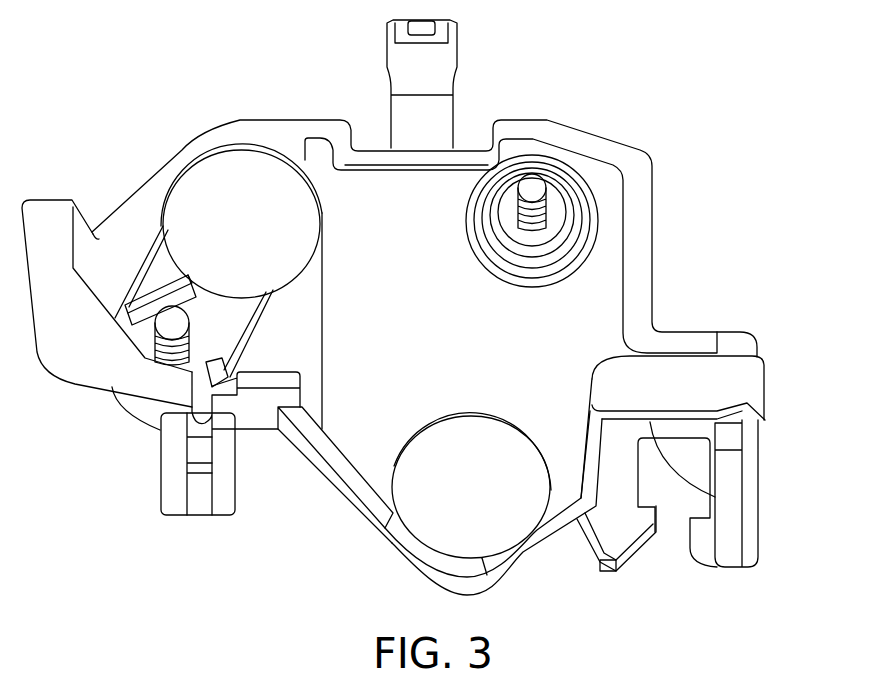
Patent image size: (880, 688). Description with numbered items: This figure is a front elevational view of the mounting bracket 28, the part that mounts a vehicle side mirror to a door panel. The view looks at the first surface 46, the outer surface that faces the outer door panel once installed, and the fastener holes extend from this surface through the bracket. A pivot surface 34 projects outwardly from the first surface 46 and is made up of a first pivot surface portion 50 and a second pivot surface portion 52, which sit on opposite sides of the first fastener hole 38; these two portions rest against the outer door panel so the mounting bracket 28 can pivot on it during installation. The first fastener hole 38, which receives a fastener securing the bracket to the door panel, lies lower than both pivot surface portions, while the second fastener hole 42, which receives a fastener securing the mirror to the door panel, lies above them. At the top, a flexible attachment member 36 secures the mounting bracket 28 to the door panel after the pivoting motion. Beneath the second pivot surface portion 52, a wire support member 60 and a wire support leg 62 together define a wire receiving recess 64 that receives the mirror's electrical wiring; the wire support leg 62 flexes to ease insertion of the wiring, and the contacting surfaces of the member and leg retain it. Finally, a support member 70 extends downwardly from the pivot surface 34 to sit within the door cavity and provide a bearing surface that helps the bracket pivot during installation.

The mounting bracket 28 is at (662, 230).
The pivot surface 34 is at (687, 422).
The flexible attachment member 36 is at (457, 85).
The first fastener hole 38 is at (513, 420).
The second fastener hole 42 is at (180, 170).
The first surface 46 is at (382, 208).
The first pivot surface portion 50 is at (147, 399).
The second pivot surface portion 52 is at (715, 497).
The wire support member 60 is at (627, 560).
The wire support leg 62 is at (760, 530).
The wire receiving recess 64 is at (670, 493).
The support member 70 is at (161, 474).